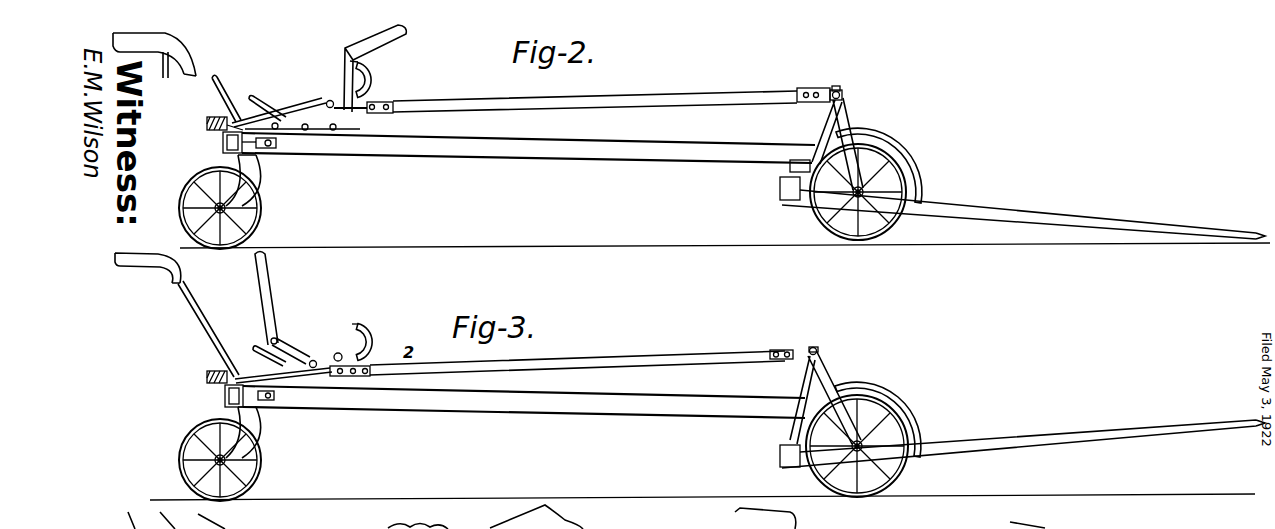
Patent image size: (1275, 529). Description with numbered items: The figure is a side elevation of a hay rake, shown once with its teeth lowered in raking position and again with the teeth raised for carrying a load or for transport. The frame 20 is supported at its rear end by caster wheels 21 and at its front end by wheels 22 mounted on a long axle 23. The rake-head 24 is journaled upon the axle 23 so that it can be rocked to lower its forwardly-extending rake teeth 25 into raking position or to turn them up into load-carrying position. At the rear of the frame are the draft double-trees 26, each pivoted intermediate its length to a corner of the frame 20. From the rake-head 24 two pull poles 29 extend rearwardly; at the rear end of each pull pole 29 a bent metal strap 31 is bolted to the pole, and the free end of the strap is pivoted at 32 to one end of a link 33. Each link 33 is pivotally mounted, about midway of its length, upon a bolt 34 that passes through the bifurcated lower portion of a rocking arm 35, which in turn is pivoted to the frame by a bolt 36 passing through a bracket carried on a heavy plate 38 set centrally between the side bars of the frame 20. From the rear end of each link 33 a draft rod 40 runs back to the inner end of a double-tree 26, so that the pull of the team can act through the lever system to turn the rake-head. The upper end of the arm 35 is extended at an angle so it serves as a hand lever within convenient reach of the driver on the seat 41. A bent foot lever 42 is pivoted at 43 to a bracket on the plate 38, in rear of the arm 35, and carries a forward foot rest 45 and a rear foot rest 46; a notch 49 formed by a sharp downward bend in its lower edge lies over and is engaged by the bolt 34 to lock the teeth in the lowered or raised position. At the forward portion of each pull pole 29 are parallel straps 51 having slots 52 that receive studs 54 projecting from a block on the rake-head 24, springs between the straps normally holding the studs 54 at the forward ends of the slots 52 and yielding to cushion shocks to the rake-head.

In FIG. 2, the frame 20 is at (497, 155).
In FIG. 3, the frame 20 is at (518, 403).
In FIG. 2, the caster wheels 21 is at (264, 204).
In FIG. 3, the caster wheels 21 is at (265, 455).
In FIG. 2, the wheels 22 is at (810, 210).
In FIG. 3, the wheels 22 is at (905, 465).
In FIG. 2, the axle 23 is at (860, 200).
In FIG. 3, the axle 23 is at (825, 465).
In FIG. 2, the rake-head 24 is at (866, 121).
In FIG. 3, the rake-head 24 is at (838, 384).
In FIG. 2, the rake teeth 25 is at (1000, 220).
In FIG. 3, the rake teeth 25 is at (1054, 440).
In FIG. 2, the double-trees 26 is at (214, 118).
In FIG. 2, the pull poles 29 is at (470, 103).
In FIG. 3, the pull poles 29 is at (693, 360).
In FIG. 2, the bent metal strap 31 is at (383, 102).
In FIG. 3, the bent metal strap 31 is at (345, 378).
In FIG. 2, the pivot 32 is at (356, 112).
In FIG. 2, the link 33 is at (330, 101).
In FIG. 3, the link 33 is at (313, 359).
In FIG. 2, the bolt 34 is at (340, 110).
In FIG. 2, the rocking arm 35 is at (345, 66).
In FIG. 3, the rocking arm 35 is at (268, 308).
In FIG. 2, the bolt 36 is at (330, 130).
In FIG. 2, the plate 38 is at (313, 132).
In FIG. 2, the draft rod 40 is at (236, 120).
In FIG. 2, the seat 41 is at (166, 60).
In FIG. 3, the seat 41 is at (148, 275).
In FIG. 2, the foot lever 42 is at (371, 76).
In FIG. 3, the foot lever 42 is at (371, 337).
In FIG. 2, the pivot 43 is at (286, 131).
In FIG. 2, the foot rest 45 is at (352, 62).
In FIG. 3, the foot rest 45 is at (356, 324).
In FIG. 2, the foot rest 46 is at (253, 97).
In FIG. 3, the foot rest 46 is at (258, 350).
In FIG. 3, the notch 49 is at (337, 352).
In FIG. 2, the straps 51 is at (805, 88).
In FIG. 3, the straps 51 is at (780, 350).
In FIG. 2, the slots 52 is at (842, 96).
In FIG. 3, the slots 52 is at (813, 348).
In FIG. 2, the studs 54 is at (838, 90).
In FIG. 3, the studs 54 is at (822, 353).